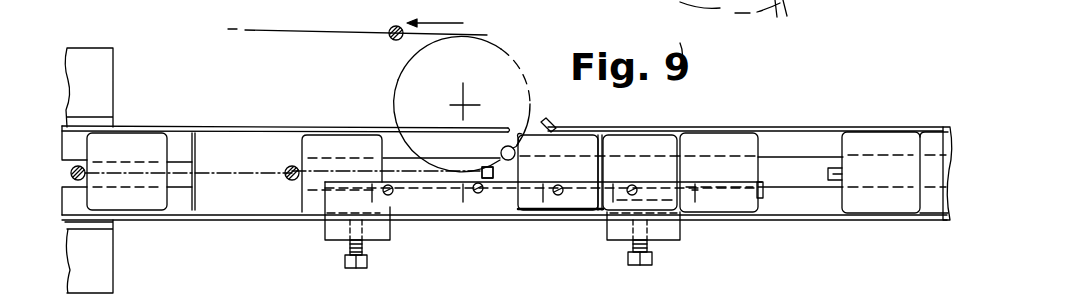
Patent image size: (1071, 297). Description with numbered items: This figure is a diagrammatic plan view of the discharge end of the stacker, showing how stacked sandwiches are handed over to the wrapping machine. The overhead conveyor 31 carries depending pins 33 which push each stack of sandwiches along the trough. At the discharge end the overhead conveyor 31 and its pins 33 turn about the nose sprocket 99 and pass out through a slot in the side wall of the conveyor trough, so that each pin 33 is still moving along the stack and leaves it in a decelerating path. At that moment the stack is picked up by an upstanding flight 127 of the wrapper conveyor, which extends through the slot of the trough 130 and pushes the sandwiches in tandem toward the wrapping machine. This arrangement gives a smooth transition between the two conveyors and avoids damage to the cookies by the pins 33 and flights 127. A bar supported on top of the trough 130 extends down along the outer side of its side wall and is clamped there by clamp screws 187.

The overhead conveyor 31 is at (268, 31).
The depending pins 33 is at (287, 181).
The nose sprocket 99 is at (400, 74).
The upstanding flights 127 is at (488, 178).
The trough 130 is at (812, 125).
The clamp screws 187 is at (367, 262).